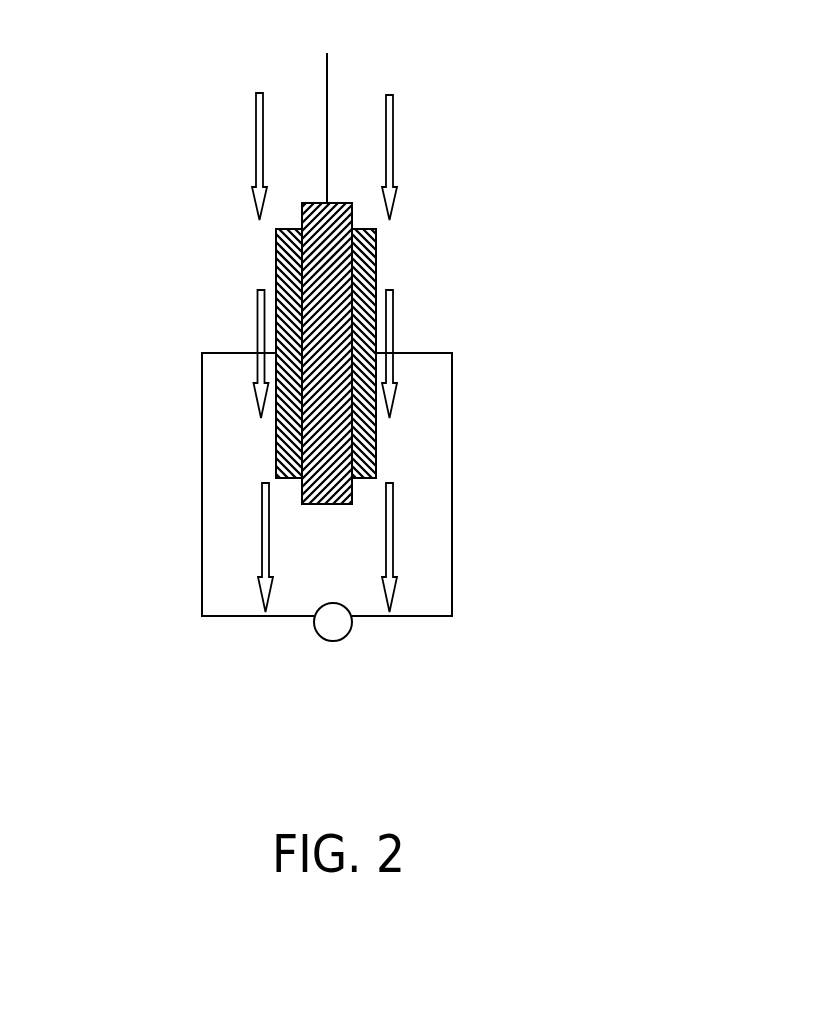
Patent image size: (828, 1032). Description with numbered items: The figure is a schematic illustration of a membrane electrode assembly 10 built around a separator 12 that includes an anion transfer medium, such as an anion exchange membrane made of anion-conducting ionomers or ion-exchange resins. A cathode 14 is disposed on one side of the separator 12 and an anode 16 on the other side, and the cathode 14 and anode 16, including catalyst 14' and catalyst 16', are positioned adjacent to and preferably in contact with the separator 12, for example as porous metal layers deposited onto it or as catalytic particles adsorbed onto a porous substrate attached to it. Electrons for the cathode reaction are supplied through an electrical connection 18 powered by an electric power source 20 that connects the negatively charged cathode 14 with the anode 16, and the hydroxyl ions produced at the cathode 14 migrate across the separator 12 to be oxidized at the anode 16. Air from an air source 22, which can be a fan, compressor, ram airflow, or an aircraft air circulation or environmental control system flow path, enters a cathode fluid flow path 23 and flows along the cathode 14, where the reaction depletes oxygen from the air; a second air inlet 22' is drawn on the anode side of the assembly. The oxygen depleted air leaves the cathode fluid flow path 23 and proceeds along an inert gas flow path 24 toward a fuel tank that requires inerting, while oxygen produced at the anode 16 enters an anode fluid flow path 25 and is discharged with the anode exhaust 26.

The membrane electrode assembly 10 is at (628, 97).
The separator 12 is at (327, 261).
The cathode 14 is at (182, 353).
The catalyst 14' is at (289, 353).
The anode 16 is at (475, 353).
The catalyst 16' is at (364, 353).
The electrical connection 18 is at (428, 353).
The electric power source 20 is at (341, 639).
The air source 22 is at (185, 138).
The inlet flow (second side) 22' is at (453, 157).
The cathode fluid flow path 23 is at (257, 334).
The inert gas flow path 24 is at (262, 538).
The anode fluid flow path 25 is at (393, 370).
The anode exhaust 26 is at (393, 552).